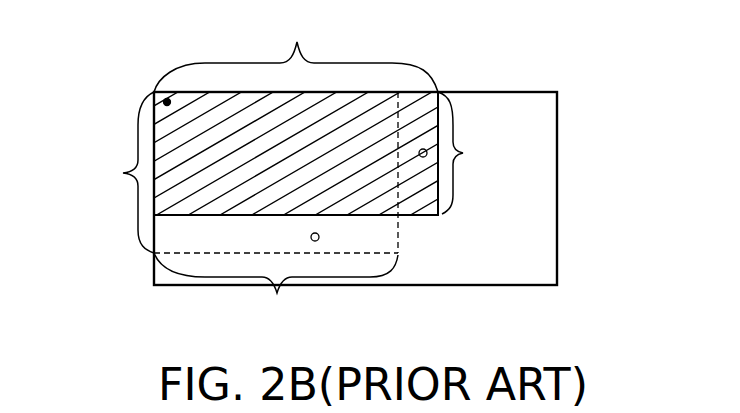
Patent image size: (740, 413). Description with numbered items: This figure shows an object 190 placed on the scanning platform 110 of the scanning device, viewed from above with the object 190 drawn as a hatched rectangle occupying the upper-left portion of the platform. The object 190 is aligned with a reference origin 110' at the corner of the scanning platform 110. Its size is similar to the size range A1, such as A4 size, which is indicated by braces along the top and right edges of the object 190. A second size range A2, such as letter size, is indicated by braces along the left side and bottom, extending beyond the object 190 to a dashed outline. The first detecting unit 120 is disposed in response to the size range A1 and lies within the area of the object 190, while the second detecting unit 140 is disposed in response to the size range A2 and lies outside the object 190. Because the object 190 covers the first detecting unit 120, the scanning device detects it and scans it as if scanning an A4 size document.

The scanning platform 110 is at (406, 188).
The reference origin 110' is at (108, 84).
The object 190 is at (438, 92).
The first detecting unit 120 is at (423, 157).
The second detecting unit 140 is at (319, 236).
The size range A1 is at (327, 114).
The size range A2 is at (240, 208).